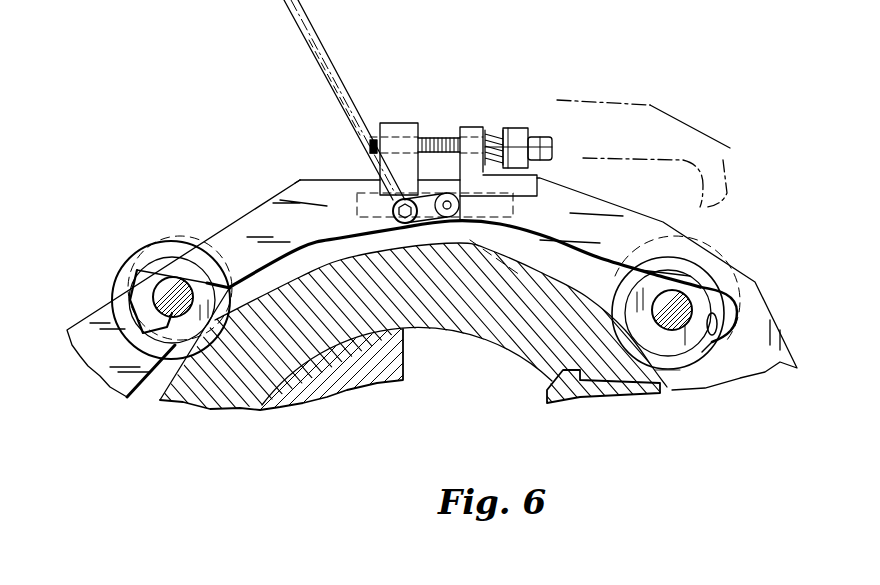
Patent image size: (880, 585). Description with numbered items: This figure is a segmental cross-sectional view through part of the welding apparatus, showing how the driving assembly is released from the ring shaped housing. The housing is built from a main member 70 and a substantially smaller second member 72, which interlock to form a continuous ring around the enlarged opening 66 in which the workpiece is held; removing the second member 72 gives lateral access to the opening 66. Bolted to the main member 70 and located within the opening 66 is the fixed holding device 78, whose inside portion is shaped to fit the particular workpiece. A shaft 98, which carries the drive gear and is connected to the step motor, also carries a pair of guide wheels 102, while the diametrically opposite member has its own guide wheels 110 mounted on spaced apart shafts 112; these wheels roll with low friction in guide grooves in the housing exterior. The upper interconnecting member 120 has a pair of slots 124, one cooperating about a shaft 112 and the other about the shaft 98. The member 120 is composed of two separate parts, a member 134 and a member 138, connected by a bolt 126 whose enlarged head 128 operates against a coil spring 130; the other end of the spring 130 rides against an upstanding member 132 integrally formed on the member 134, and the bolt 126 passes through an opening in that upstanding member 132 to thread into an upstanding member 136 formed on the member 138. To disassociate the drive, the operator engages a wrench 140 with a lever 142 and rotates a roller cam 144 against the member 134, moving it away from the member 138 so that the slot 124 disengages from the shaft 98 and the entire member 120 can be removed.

The enlarged opening 66 is at (513, 365).
The main member 70 is at (468, 323).
The second member 72 is at (600, 397).
The fixed holding device 78 is at (345, 375).
The shaft 98 is at (676, 292).
The guide wheels 102 is at (690, 368).
The guide wheels 110 is at (155, 243).
The shafts 112 is at (140, 262).
The upper interconnecting member 120 is at (293, 178).
The slots 124 is at (127, 335).
The bolt 126 is at (548, 160).
The enlarged head 128 is at (520, 132).
The coil spring 130 is at (490, 130).
The upstanding member 132 is at (462, 127).
The member 134 is at (680, 104).
The upstanding member 136 is at (396, 125).
The member 138 is at (238, 213).
The wrench 140 is at (300, 36).
The lever 142 is at (448, 226).
The roller cam 144 is at (460, 183).